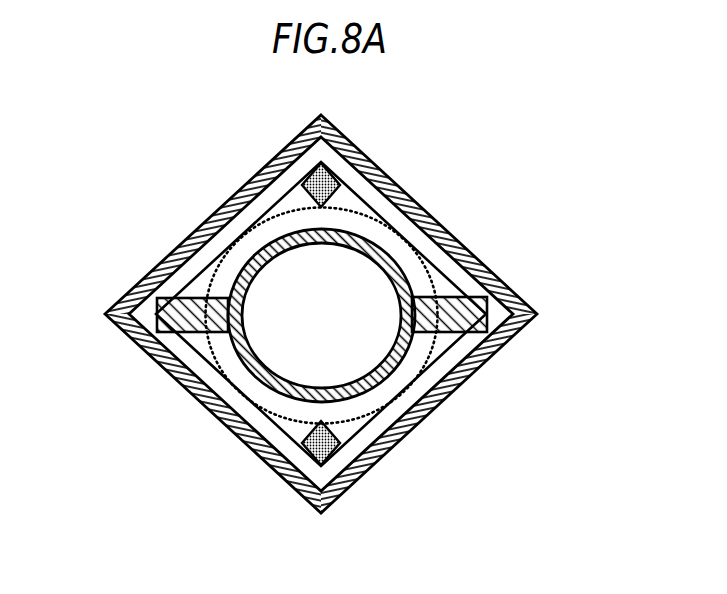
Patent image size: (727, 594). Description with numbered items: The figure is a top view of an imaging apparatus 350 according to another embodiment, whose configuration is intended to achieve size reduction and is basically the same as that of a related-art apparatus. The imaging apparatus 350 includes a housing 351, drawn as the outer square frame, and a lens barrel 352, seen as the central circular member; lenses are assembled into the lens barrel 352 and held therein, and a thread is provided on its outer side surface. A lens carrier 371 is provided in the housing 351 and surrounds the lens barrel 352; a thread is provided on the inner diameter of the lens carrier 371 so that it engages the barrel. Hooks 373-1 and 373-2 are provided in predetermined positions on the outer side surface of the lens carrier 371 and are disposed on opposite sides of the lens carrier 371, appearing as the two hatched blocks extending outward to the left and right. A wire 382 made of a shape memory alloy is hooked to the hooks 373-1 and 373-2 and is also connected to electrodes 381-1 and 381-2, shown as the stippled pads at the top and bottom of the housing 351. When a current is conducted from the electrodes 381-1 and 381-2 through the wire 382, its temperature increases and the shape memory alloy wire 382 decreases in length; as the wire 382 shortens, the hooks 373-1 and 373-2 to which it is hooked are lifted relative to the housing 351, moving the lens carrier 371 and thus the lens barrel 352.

The imaging apparatus 350 is at (402, 188).
The housing 351 is at (452, 233).
The lens barrel 352 is at (363, 343).
The lens carrier 371 is at (358, 387).
The hook 373-1 is at (157, 296).
The hook 373-2 is at (481, 296).
The electrode 381-1 is at (345, 163).
The electrode 381-2 is at (332, 450).
The wire 382 is at (167, 370).